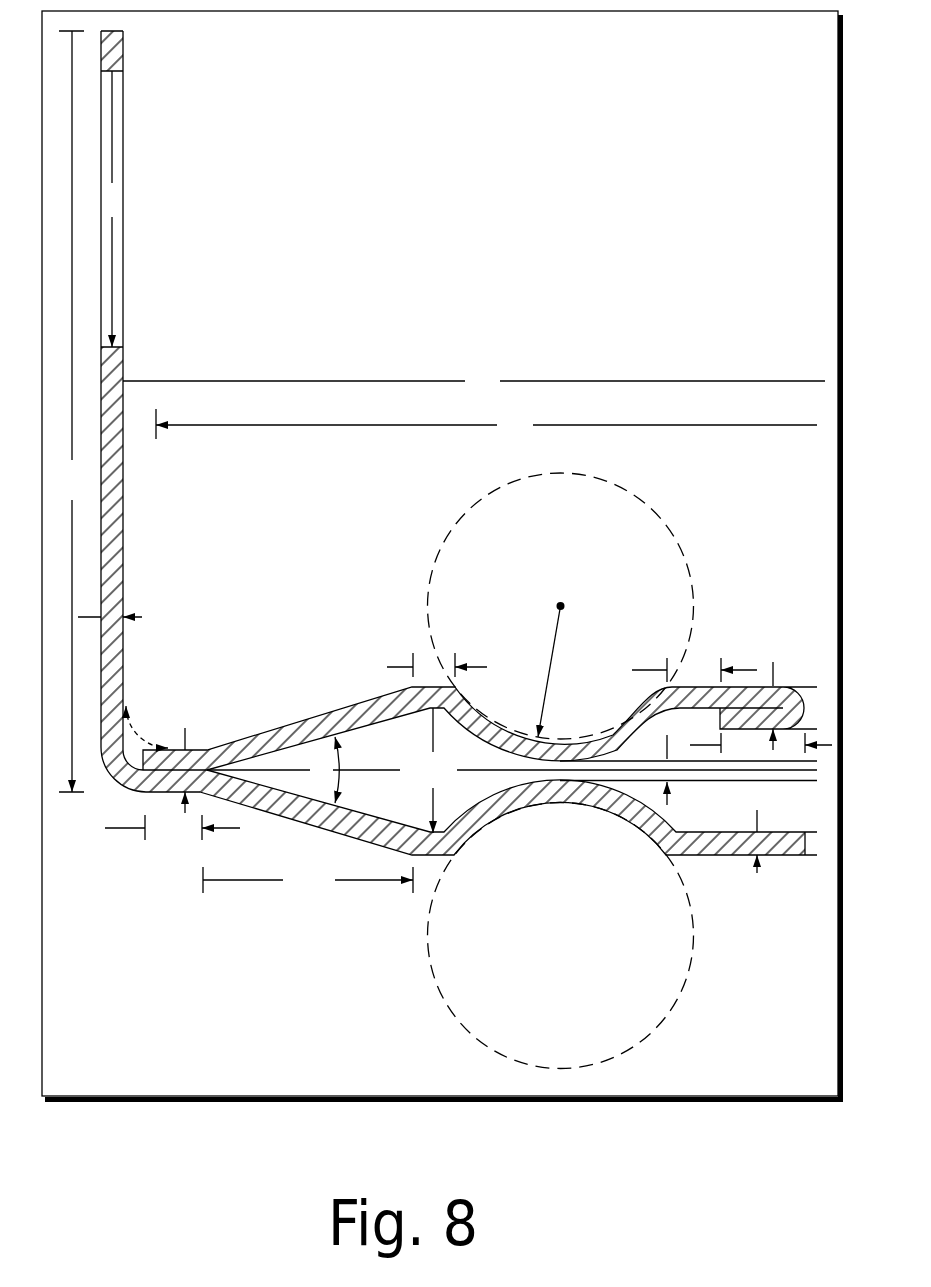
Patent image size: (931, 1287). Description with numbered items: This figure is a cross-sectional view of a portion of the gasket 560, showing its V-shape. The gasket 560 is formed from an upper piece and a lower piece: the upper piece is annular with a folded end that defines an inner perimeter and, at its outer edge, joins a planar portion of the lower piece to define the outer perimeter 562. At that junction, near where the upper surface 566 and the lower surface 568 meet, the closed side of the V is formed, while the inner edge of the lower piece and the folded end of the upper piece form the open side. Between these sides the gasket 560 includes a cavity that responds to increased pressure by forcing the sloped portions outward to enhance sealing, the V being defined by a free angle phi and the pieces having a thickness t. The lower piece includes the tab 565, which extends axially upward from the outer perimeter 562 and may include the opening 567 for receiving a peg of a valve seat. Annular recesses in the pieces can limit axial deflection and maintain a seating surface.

The gasket 560 is at (787, 61).
The perimeter 562 is at (144, 751).
The tab 565 is at (122, 533).
The upper surface 566 is at (318, 716).
The opening 567 is at (122, 347).
The lower surface 568 is at (318, 826).